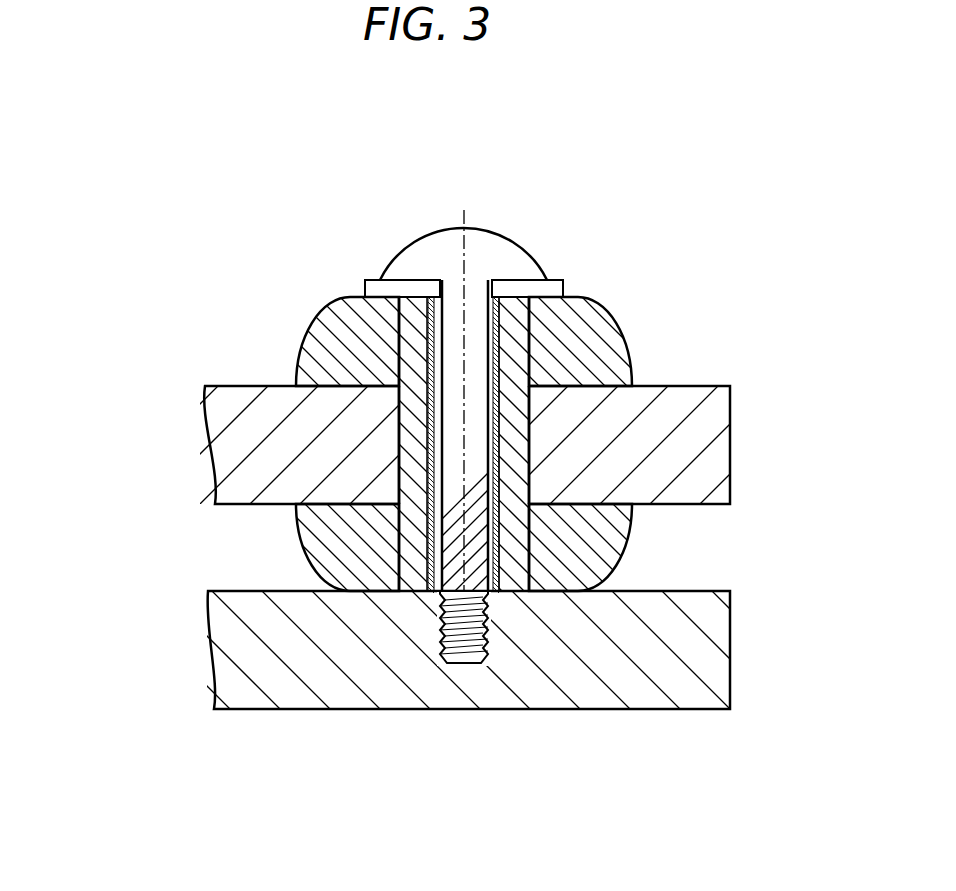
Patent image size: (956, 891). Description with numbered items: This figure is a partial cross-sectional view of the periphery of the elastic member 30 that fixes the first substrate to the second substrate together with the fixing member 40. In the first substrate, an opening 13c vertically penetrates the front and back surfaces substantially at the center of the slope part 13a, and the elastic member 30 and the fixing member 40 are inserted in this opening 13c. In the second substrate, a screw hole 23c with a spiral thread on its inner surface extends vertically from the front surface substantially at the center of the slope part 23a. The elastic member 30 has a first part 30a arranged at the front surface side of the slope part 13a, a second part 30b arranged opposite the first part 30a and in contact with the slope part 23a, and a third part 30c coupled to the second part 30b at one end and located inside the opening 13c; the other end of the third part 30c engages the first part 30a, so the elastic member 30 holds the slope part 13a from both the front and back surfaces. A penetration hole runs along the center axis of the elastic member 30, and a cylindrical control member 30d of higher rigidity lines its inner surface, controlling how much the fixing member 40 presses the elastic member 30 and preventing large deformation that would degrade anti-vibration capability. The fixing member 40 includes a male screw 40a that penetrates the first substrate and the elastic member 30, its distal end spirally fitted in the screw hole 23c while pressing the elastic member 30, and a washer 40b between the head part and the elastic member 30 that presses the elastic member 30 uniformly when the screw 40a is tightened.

The fixing member 40 is at (618, 167).
The screw 40a is at (497, 240).
The washer 40b is at (557, 277).
The elastic member 30 is at (85, 335).
The first part 30a is at (330, 348).
The second part 30b is at (325, 558).
The third part 30c is at (412, 458).
The control member 30d is at (428, 327).
The slope part 13a is at (713, 412).
The opening 13c is at (525, 458).
The slope part 23a is at (718, 657).
The screw hole 23c is at (463, 657).